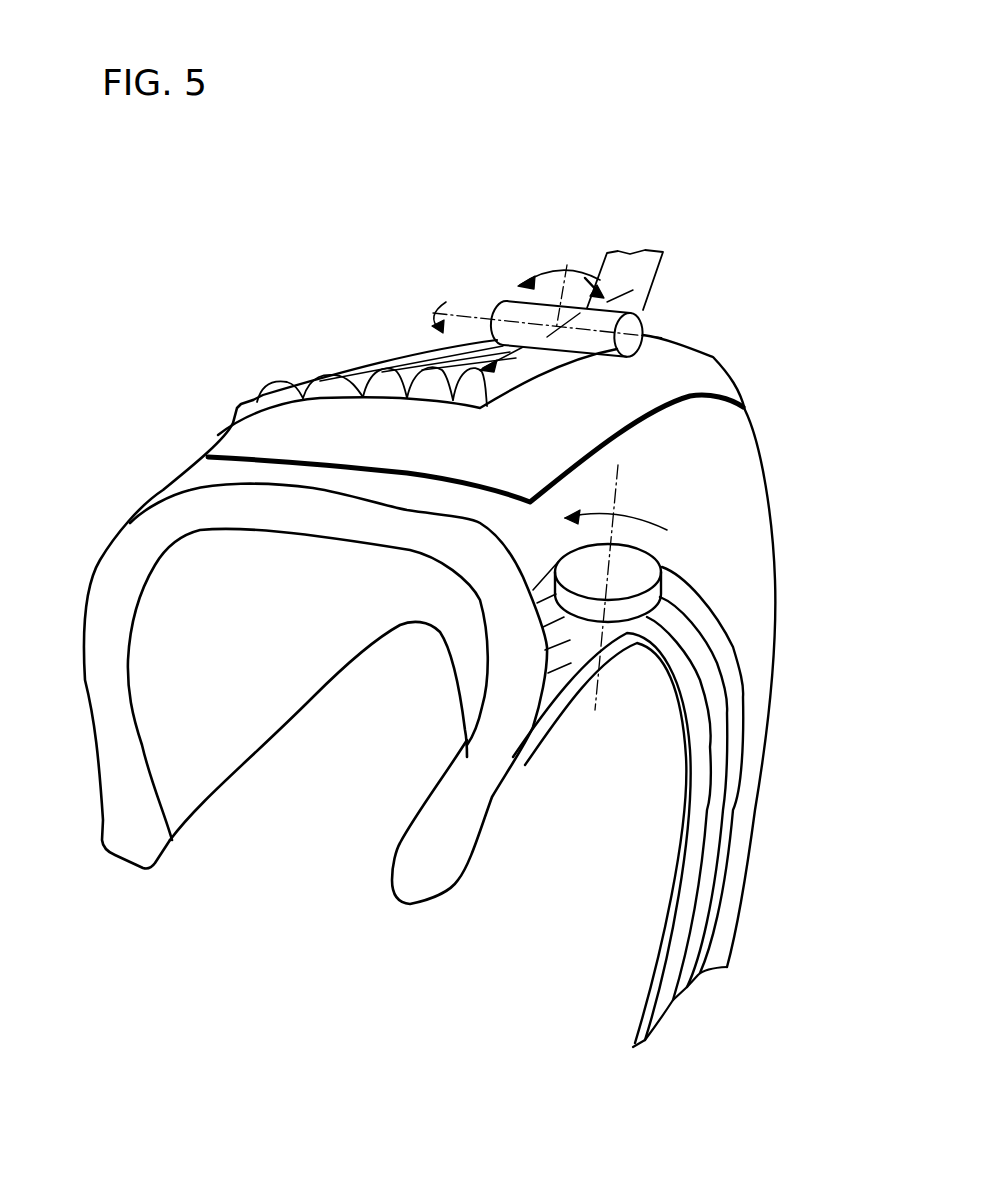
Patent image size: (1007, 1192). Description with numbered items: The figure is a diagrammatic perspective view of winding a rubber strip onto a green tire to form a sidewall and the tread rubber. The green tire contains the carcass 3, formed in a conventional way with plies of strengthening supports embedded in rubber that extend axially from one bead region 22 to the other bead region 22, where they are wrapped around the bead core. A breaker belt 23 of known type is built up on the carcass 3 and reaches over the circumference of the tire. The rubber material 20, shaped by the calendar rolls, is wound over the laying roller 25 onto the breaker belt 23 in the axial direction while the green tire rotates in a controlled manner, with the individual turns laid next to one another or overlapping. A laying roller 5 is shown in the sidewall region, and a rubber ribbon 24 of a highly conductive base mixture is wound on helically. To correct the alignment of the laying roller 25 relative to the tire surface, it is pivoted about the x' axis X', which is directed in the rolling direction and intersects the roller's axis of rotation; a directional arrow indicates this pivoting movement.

The carcass 3 is at (116, 593).
The laying roller 5 is at (607, 583).
The rubber material 20 is at (533, 590).
The bead region 22 is at (128, 823).
The breaker belt 23 is at (493, 447).
The rubber ribbon 24 is at (585, 278).
The laying roller 25 is at (500, 317).
The x' axis X' is at (628, 265).